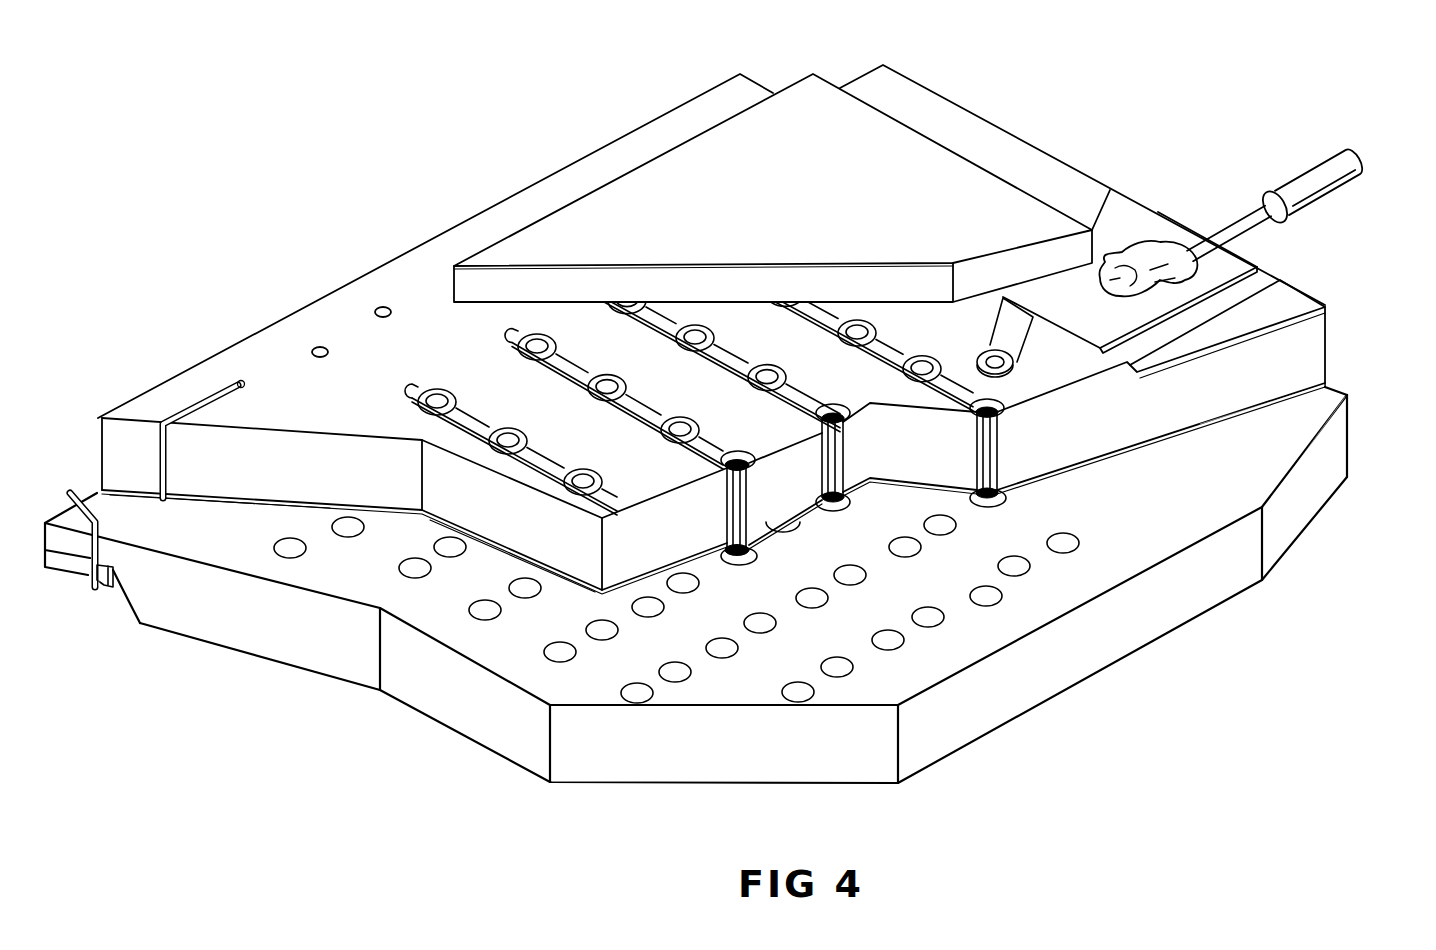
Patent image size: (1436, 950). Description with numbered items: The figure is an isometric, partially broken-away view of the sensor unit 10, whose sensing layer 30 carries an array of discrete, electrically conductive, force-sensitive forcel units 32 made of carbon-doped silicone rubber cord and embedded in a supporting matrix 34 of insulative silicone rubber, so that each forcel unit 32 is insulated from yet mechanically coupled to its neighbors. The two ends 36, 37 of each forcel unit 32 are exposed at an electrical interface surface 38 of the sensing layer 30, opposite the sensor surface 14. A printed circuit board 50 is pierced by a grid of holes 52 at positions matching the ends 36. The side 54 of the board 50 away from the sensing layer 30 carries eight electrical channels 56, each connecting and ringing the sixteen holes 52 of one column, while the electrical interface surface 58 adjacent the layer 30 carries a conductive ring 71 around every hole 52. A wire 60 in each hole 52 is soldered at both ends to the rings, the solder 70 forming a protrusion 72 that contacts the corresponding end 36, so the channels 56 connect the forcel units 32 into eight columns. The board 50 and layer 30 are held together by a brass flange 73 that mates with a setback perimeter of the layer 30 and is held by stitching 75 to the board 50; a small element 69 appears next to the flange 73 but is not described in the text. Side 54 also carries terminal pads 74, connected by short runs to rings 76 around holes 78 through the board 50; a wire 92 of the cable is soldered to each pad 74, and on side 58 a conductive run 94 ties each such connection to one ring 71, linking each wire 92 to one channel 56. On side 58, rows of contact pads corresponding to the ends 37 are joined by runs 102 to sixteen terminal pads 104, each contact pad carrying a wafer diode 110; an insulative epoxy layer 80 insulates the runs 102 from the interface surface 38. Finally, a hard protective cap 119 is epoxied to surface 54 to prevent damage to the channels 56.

The sensor unit 10 is at (939, 80).
The sensor surface 14 is at (1146, 680).
The sensing layer 30 is at (1354, 441).
The forcel units 32 is at (762, 647).
The supporting matrix 34 is at (972, 726).
The end of forcel unit 36 is at (812, 602).
The end of forcel unit 37 is at (760, 624).
The electrical interface surface 38 is at (1178, 528).
The printed circuit board 50 is at (1334, 347).
The holes 52 is at (757, 478).
The opposite side of board 54 is at (1108, 380).
The electrical channels 56 is at (455, 430).
The electrical interface surface of board 58 is at (1113, 452).
The wire 60 is at (727, 500).
The clip block 69 is at (115, 578).
The solder 70 is at (745, 540).
The electrically-conductive ring 71 is at (753, 560).
The protrusion 72 is at (736, 460).
The brass flange 73 is at (105, 590).
The terminal pads 74 is at (1160, 228).
The stitching 75 is at (212, 392).
The rings 76 is at (990, 352).
The holes 78 is at (1018, 362).
The insulative epoxy layer 80 is at (1133, 450).
The wire 92 is at (1235, 222).
The conductive run 94 is at (944, 491).
The run (electrical channel) 102 is at (323, 507).
The terminal pads 104 is at (1296, 393).
The wafer diode 110 is at (800, 520).
The hard protective cap 119 is at (955, 172).